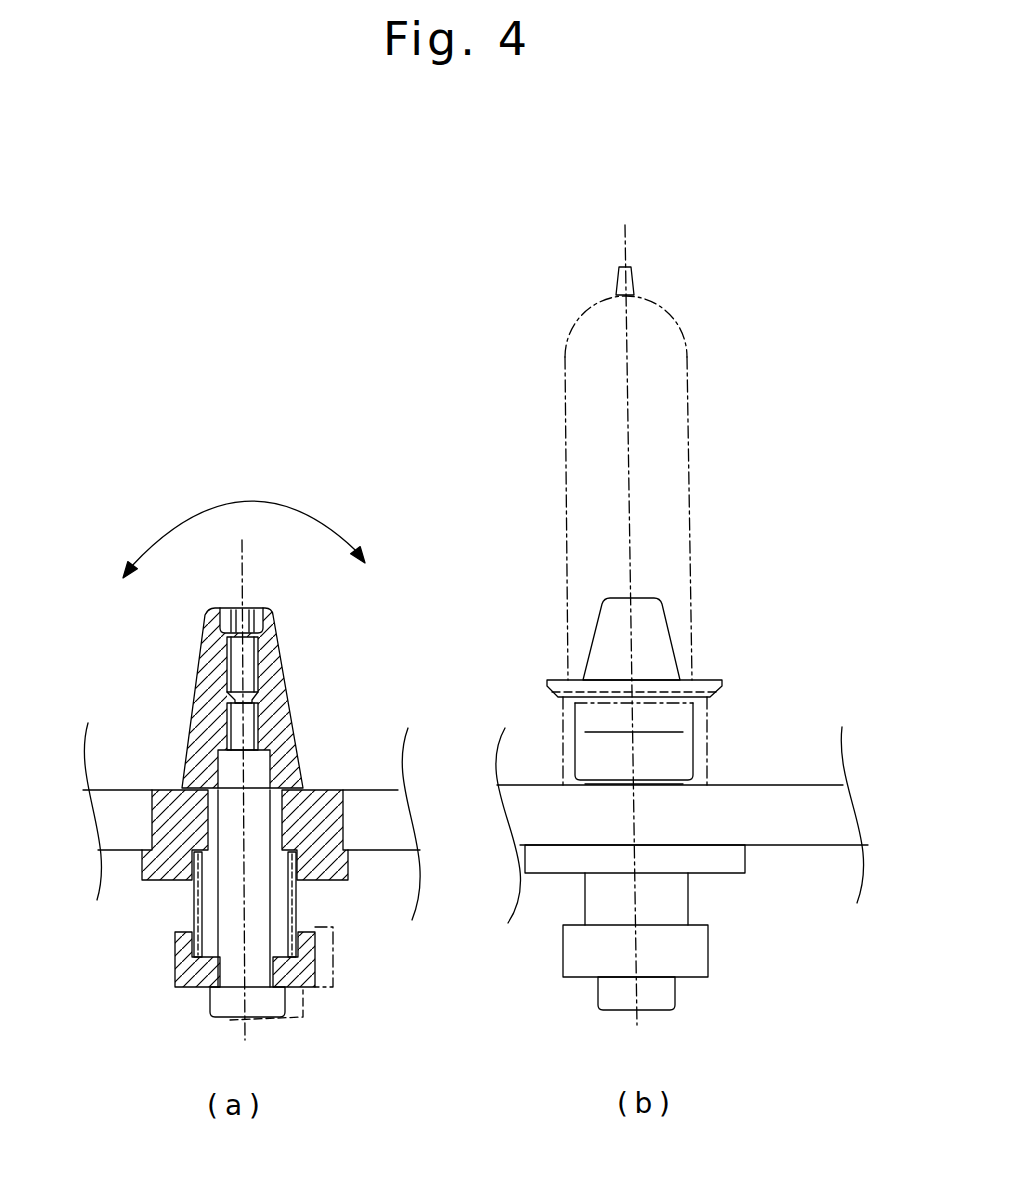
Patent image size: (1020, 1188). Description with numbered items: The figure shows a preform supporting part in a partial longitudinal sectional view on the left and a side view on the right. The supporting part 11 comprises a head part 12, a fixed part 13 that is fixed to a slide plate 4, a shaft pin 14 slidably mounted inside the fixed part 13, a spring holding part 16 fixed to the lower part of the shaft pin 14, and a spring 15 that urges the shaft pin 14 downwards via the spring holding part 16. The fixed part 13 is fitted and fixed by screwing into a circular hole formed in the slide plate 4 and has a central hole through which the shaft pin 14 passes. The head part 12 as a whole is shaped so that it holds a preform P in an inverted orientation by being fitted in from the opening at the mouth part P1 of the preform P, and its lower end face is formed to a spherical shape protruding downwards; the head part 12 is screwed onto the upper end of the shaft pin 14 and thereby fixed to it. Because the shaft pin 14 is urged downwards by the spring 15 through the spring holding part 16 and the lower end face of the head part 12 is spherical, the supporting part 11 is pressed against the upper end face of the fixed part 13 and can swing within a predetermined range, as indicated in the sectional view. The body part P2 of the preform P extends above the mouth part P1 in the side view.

The slide plate 4 is at (117, 828).
The supporting part 11 is at (323, 620).
The head part 12 is at (193, 670).
The fixed part 13 is at (167, 877).
The shaft pin 14 is at (240, 890).
The spring 15 is at (307, 887).
The spring holding part 16 is at (300, 967).
The preform P is at (723, 349).
The mouth part P1 is at (702, 747).
The body part P2 is at (657, 500).